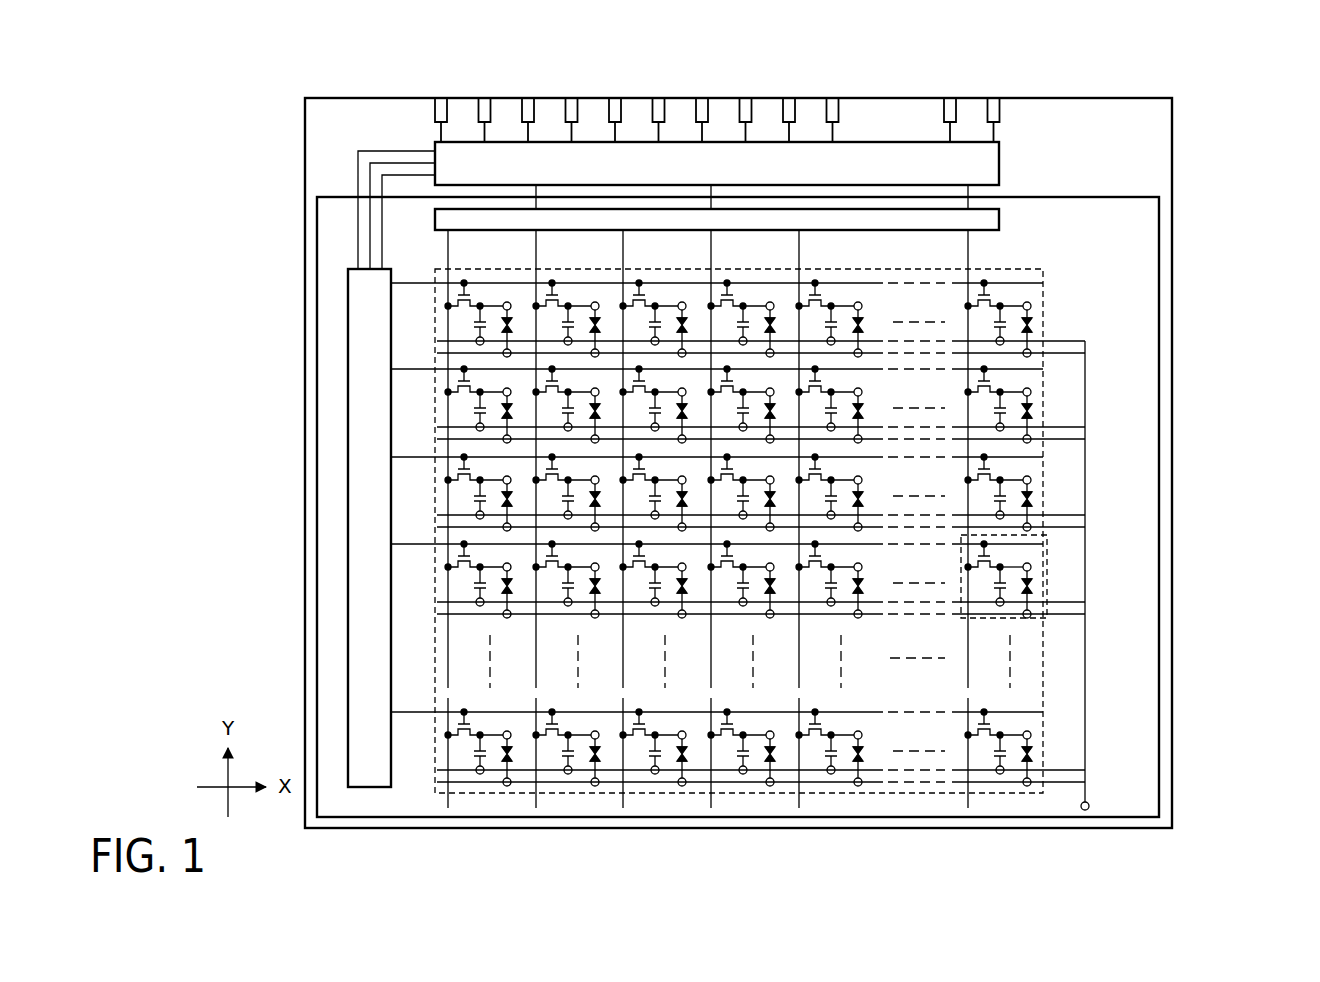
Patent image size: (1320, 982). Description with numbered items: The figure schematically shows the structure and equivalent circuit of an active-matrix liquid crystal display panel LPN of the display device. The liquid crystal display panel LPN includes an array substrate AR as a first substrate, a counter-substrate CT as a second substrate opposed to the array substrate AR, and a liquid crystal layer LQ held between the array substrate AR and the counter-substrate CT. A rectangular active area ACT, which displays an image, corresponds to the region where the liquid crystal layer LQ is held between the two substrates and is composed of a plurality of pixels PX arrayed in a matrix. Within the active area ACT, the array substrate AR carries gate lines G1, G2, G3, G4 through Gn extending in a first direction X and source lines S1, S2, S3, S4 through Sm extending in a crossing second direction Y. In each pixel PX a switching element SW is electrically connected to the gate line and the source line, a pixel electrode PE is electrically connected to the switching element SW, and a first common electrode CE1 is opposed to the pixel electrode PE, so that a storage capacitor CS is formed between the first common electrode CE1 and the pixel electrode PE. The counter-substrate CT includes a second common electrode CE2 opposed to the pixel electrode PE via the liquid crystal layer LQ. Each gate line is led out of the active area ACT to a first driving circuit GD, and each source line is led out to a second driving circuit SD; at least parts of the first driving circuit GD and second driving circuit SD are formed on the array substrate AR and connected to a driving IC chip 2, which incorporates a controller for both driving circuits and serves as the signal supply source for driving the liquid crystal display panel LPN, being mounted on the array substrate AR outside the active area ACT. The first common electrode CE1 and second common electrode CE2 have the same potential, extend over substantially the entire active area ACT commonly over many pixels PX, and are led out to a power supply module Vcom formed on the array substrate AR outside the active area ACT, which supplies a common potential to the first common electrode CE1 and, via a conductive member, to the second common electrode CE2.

The liquid crystal display panel LPN is at (1216, 102).
The array substrate AR is at (1152, 151).
The counter-substrate CT is at (1160, 250).
The driving IC chip 2 is at (1000, 144).
The second driving circuit SD is at (1000, 218).
The first driving circuit GD is at (347, 650).
The source line S1 is at (451, 250).
The source line S2 is at (539, 250).
The source line S3 is at (626, 250).
The source line S4 is at (714, 250).
The source line Sm is at (971, 250).
The gate line G1 is at (406, 281).
The gate line G2 is at (406, 367).
The gate line G3 is at (406, 455).
The gate line G4 is at (406, 542).
The gate line Gn is at (406, 710).
The active area ACT is at (1045, 383).
The pixel PX is at (1017, 598).
The switching element SW is at (970, 555).
The storage capacitor CS is at (986, 588).
The pixel electrode PE is at (1031, 565).
The liquid crystal layer LQ is at (1034, 585).
The second common electrode CE2 is at (1035, 598).
The first common electrode CE1 is at (1002, 606).
The power supply module Vcom is at (1084, 810).